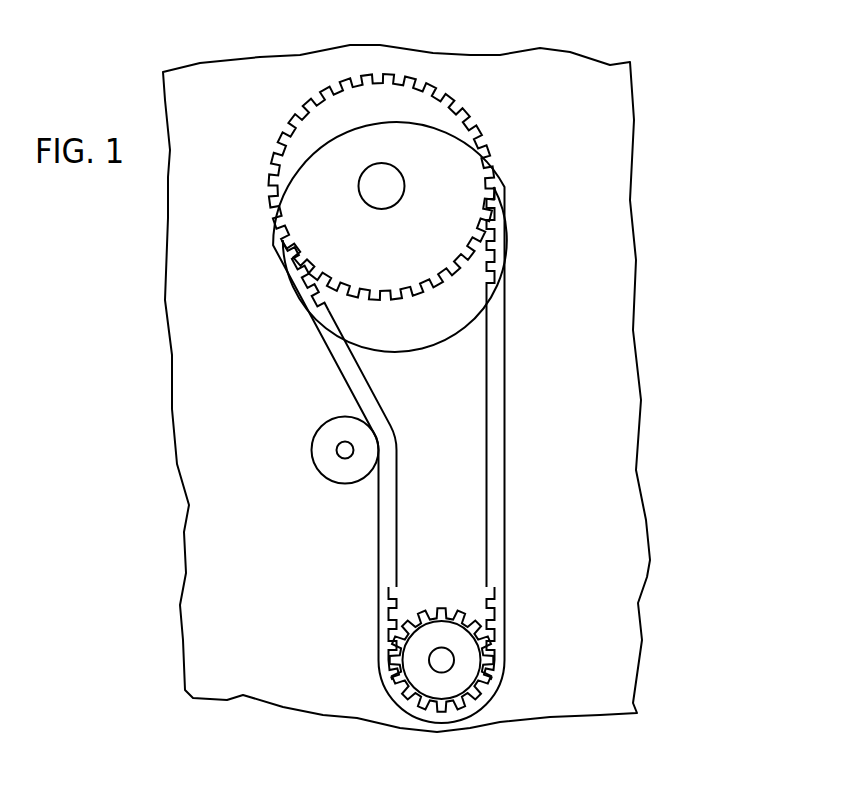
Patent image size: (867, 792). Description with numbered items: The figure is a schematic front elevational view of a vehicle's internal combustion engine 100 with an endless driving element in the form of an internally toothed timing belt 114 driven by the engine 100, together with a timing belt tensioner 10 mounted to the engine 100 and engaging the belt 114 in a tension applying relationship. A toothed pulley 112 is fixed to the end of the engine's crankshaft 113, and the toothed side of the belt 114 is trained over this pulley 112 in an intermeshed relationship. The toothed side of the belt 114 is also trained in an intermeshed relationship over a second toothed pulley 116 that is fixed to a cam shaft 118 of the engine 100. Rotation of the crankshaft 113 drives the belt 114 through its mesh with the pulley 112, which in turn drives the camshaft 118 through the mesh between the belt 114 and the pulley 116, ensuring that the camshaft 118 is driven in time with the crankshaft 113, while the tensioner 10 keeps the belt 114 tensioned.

The internal combustion engine 100 is at (662, 167).
The timing belt tensioner 10 is at (317, 464).
The toothed pulley 112 is at (411, 661).
The crankshaft 113 is at (447, 655).
The timing belt 114 is at (502, 509).
The toothed pulley 116 is at (450, 178).
The cam shaft 118 is at (384, 196).